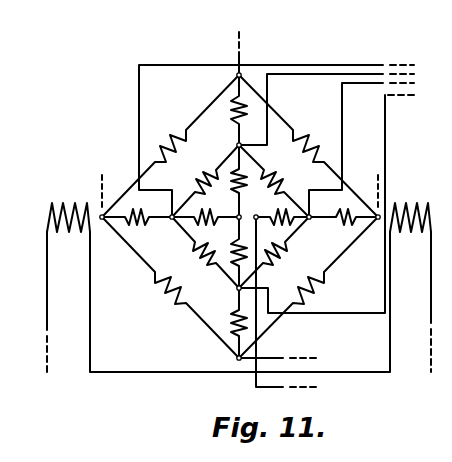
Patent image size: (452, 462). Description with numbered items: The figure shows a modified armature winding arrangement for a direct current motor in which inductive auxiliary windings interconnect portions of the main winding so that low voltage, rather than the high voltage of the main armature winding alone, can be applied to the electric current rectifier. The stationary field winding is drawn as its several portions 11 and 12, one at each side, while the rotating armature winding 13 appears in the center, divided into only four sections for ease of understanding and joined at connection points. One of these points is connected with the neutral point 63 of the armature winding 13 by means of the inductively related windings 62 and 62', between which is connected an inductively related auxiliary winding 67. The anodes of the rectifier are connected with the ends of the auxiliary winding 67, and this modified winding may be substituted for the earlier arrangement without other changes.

The stationary field winding portion 11 is at (62, 238).
The stationary field winding portion 12 is at (404, 243).
The armature winding 13 is at (222, 307).
The inductively related winding 62 is at (274, 181).
The inductively related winding 62' is at (287, 252).
The neutral point 63 is at (237, 213).
The auxiliary winding 67 is at (197, 257).